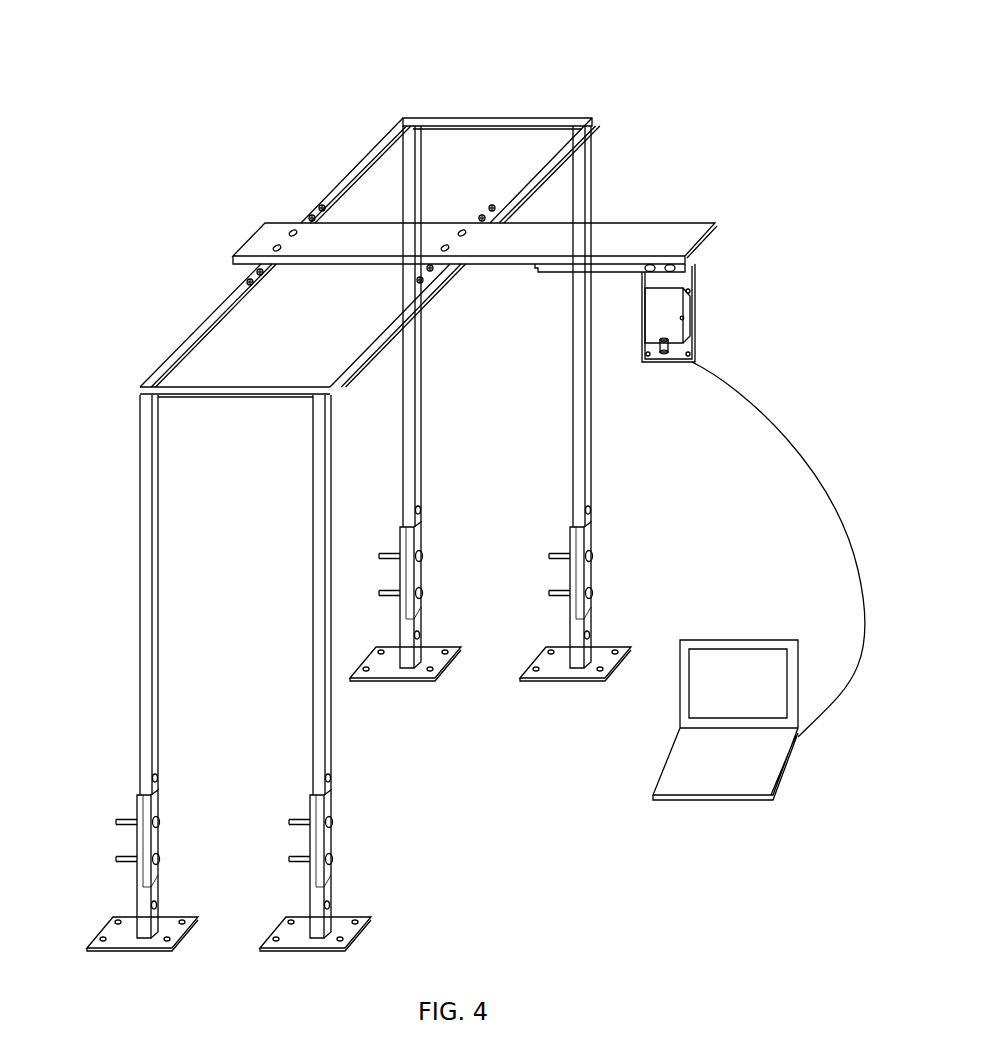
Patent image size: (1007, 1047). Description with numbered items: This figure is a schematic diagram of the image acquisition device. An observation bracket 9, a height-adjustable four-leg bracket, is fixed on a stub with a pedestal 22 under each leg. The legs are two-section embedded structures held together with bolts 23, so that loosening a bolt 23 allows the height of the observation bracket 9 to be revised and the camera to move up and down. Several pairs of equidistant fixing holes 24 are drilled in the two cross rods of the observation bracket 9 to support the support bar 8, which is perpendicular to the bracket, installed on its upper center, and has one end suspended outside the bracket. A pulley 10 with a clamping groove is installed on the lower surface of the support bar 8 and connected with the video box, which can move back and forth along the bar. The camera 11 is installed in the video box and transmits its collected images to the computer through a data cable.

The support bar 8 is at (287, 223).
The observation bracket 9 is at (407, 222).
The pulley 10 is at (680, 272).
The camera 11 is at (621, 306).
The pedestal 22 is at (130, 930).
The bolt 23 is at (152, 808).
The fixing holes 24 is at (245, 282).